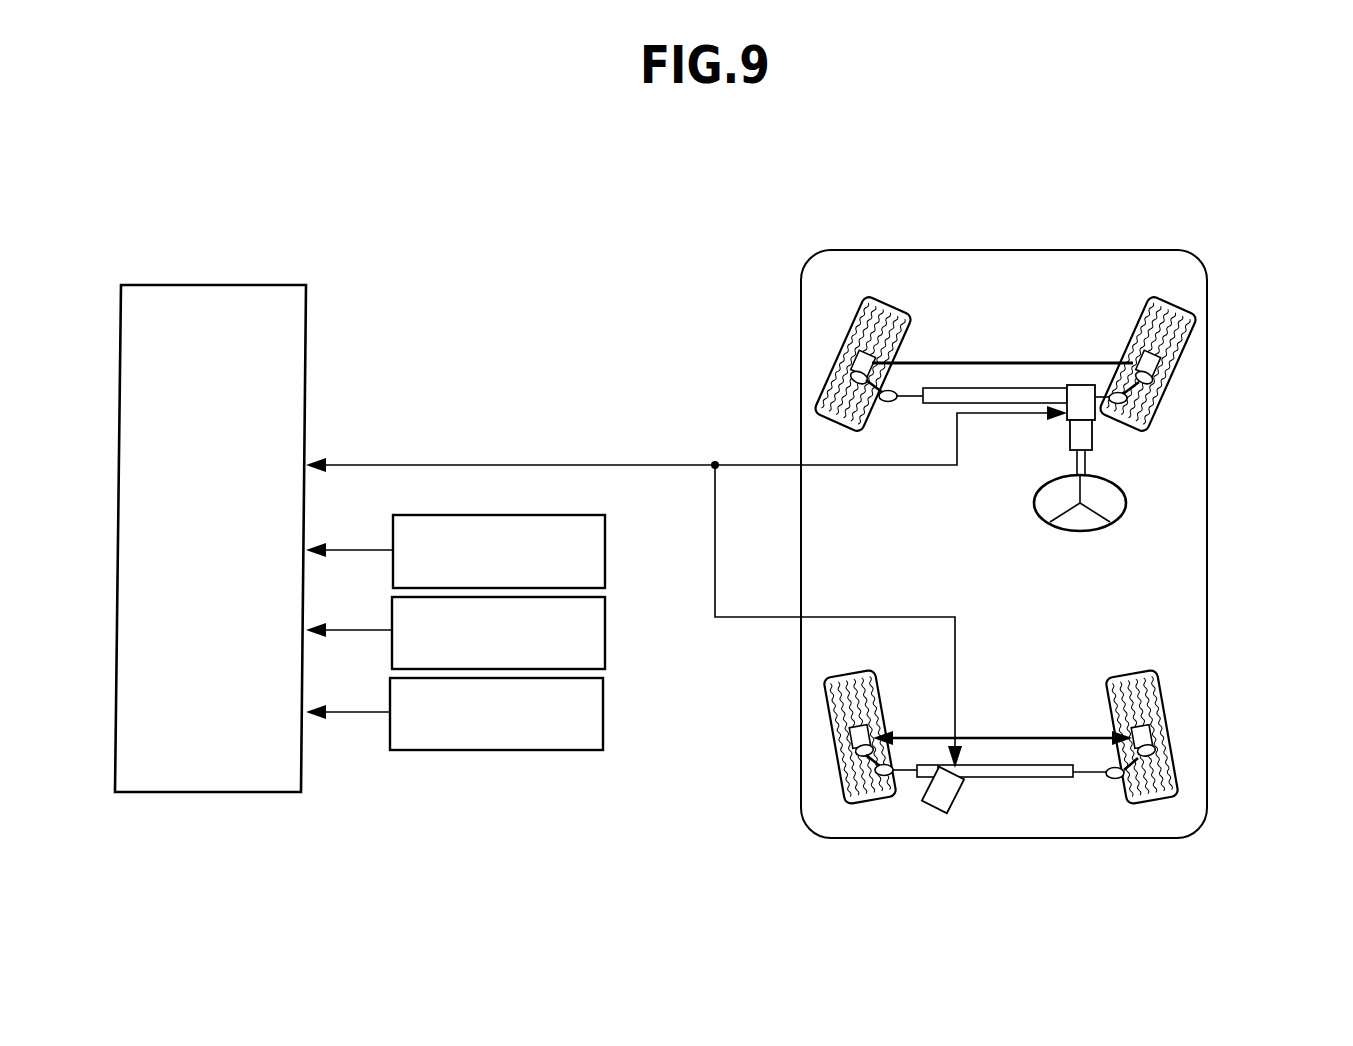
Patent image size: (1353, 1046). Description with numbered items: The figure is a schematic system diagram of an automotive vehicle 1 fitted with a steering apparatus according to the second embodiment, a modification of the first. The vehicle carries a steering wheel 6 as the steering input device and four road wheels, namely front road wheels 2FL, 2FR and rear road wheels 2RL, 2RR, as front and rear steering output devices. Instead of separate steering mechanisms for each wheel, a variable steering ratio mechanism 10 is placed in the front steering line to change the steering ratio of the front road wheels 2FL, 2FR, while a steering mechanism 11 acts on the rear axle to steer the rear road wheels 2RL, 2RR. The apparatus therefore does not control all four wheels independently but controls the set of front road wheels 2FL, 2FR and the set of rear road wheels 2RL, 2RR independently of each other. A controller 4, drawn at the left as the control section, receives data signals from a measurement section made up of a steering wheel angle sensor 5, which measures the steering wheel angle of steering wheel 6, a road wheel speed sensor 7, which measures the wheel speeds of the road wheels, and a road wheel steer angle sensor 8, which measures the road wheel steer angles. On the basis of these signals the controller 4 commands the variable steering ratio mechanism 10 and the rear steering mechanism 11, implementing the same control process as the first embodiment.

The automotive vehicle 1 is at (1100, 176).
The front left road wheel 2FL is at (836, 363).
The front right road wheel 2FR is at (1176, 368).
The rear left road wheel 2RL is at (834, 740).
The rear right road wheel 2RR is at (1176, 752).
The controller 4 is at (305, 345).
The steering wheel angle sensor 5 is at (605, 547).
The steering wheel 6 is at (1036, 493).
The road wheel speed sensor 7 is at (605, 630).
The road wheel steer angle sensor 8 is at (603, 713).
The variable steering ratio mechanism 10 is at (1093, 433).
The steering mechanism 11 is at (935, 811).